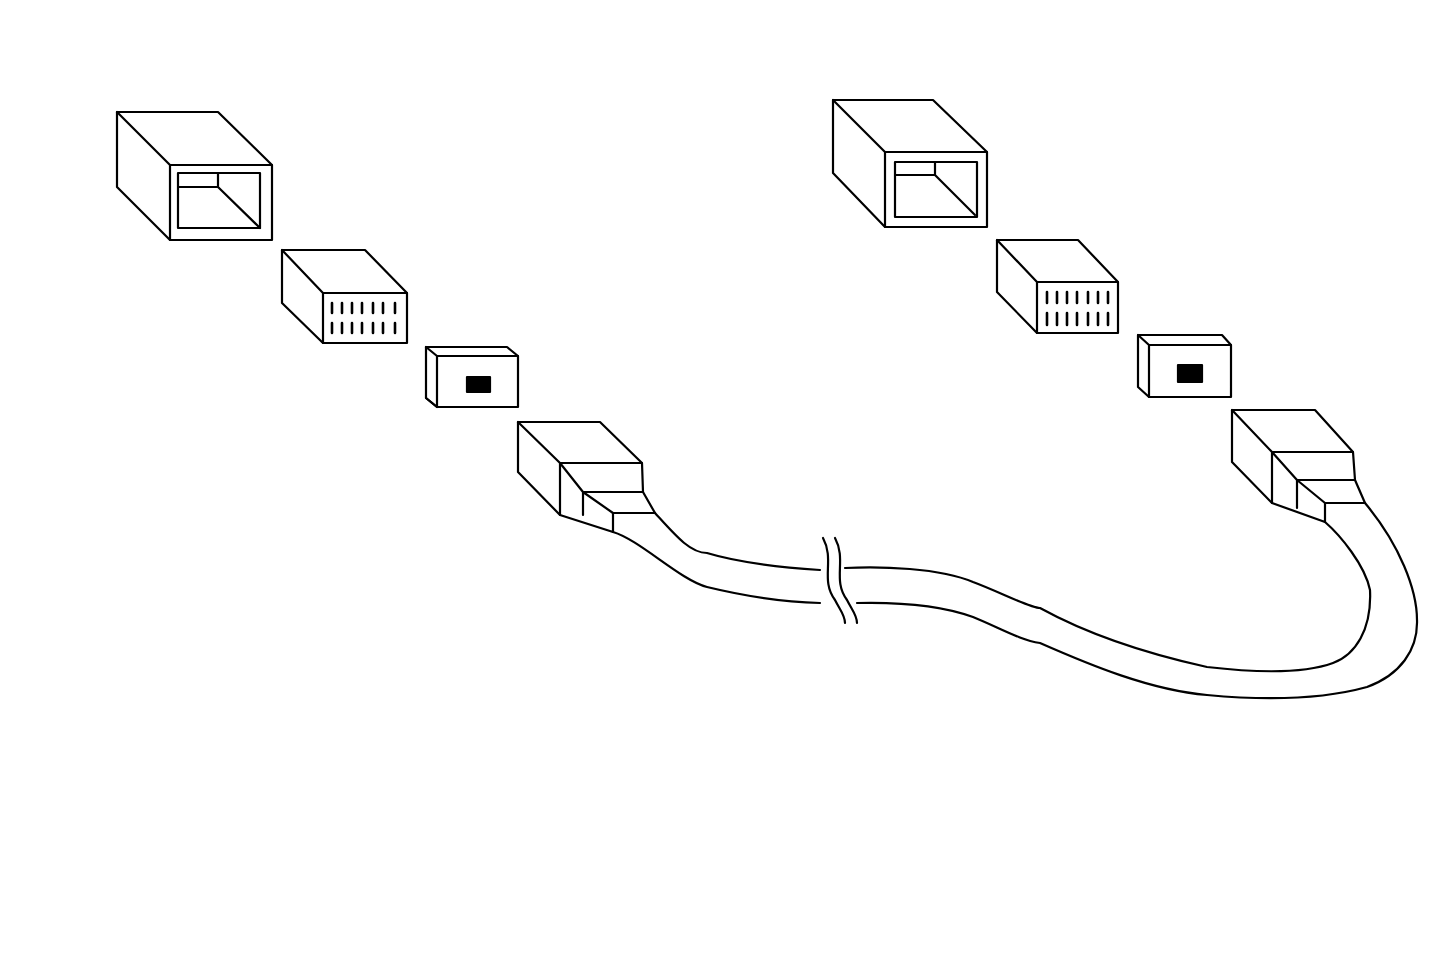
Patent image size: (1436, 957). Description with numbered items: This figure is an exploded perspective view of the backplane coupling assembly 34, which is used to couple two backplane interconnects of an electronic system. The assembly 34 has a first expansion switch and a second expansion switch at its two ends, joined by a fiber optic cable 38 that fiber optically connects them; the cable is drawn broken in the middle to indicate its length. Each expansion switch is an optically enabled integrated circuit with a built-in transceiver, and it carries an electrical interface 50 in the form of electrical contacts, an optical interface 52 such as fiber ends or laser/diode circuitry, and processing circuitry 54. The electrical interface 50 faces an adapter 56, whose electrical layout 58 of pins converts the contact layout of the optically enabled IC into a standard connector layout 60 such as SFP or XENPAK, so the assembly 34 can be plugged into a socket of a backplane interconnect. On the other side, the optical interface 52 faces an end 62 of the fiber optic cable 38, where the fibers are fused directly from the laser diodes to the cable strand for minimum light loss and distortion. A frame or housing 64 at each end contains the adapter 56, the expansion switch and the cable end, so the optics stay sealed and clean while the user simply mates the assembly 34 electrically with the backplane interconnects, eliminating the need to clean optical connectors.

The backplane coupling assembly 34 is at (347, 670).
The fiber optic cable 38 is at (692, 552).
The electrical interface 50 is at (445, 315).
The optical interface 52 is at (476, 410).
The processing circuitry 54 is at (429, 414).
The adapter 56 is at (358, 260).
The electrical layout 58 is at (364, 350).
The standard connector layout 60 is at (259, 284).
The end of fiber optic cable 62 is at (563, 393).
The frame or housing 64 is at (212, 118).